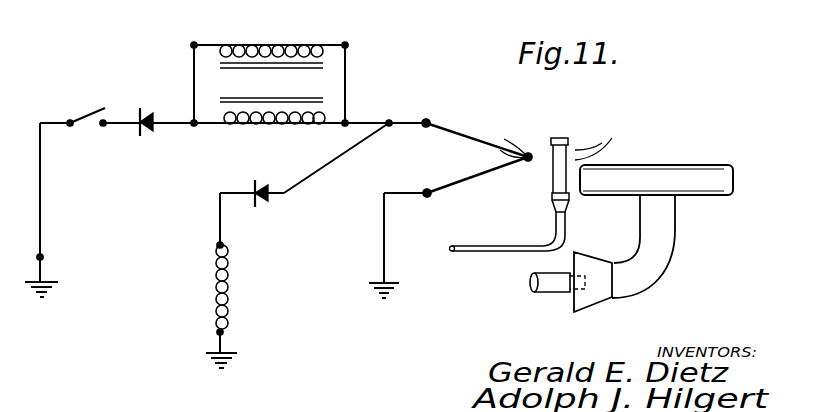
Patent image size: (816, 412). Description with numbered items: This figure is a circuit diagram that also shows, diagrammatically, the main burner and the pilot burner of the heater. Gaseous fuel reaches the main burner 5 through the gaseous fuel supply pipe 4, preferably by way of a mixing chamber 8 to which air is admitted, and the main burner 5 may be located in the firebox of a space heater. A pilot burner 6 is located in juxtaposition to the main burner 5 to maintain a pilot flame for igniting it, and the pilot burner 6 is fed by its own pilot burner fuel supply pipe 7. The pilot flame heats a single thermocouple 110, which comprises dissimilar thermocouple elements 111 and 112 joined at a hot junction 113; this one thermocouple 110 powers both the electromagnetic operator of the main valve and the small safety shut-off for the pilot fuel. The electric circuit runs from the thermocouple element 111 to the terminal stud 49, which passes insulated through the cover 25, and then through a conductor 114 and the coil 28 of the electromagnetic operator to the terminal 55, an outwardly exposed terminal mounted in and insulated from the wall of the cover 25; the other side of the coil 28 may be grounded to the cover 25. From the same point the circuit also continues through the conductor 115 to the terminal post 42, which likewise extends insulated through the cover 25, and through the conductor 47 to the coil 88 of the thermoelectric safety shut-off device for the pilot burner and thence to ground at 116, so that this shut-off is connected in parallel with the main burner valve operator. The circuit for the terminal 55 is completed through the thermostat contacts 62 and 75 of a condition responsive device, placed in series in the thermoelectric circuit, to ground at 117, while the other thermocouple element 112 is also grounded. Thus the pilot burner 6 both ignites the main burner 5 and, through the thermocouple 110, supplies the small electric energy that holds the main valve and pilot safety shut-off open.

The gaseous fuel supply pipe 4 is at (547, 285).
The main burner 5 is at (651, 176).
The pilot burner 6 is at (566, 140).
The pilot burner fuel supply pipe 7 is at (481, 250).
The mixing chamber 8 is at (593, 303).
The cover 25 is at (273, 43).
The coils of the power unit 28 is at (283, 110).
The terminal post 42 is at (264, 200).
The conductor 47 is at (219, 218).
The terminal stud 49 is at (390, 121).
The terminal 55 is at (148, 131).
The thermostat contact 62 is at (102, 128).
The thermostat contact 75 is at (85, 109).
The coil of the thermoelectric safety shut-off 88 is at (215, 281).
The thermocouple 110 is at (468, 130).
The thermocouple element 111 is at (438, 128).
The thermocouple element 112 is at (456, 183).
The hot junction 113 is at (531, 151).
The conductor 114 is at (347, 124).
The conductor 115 is at (327, 166).
The ground 116 is at (210, 365).
The ground 117 is at (52, 300).